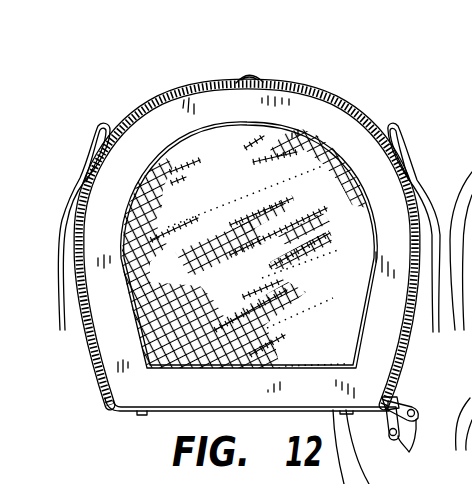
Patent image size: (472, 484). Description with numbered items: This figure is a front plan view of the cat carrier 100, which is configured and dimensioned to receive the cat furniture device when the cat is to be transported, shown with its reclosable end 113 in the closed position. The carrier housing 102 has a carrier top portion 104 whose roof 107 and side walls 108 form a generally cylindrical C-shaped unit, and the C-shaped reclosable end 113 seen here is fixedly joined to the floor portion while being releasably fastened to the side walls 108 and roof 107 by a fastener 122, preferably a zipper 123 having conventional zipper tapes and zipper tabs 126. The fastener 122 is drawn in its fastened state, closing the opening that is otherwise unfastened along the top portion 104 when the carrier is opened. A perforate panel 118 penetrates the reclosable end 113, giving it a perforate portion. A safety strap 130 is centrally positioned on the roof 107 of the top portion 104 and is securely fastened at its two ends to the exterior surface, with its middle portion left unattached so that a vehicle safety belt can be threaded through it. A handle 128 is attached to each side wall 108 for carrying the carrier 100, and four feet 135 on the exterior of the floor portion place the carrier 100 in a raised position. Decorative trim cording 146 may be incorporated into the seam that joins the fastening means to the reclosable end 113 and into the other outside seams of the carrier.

The cat carrier 100 is at (420, 45).
The carrier housing 102 is at (323, 90).
The carrier top portion 104 is at (125, 121).
The roof 107 is at (176, 89).
The side walls 108 is at (103, 391).
The reclosable end 113 is at (320, 397).
The perforate panel 118 is at (207, 87).
The fastener 122 is at (392, 127).
The zipper 123 is at (212, 127).
The zipper tabs 126 is at (402, 440).
The handle 128 is at (415, 172).
The safety strap 130 is at (259, 73).
The feet 135 is at (148, 413).
The decorative trim cording 146 is at (380, 132).